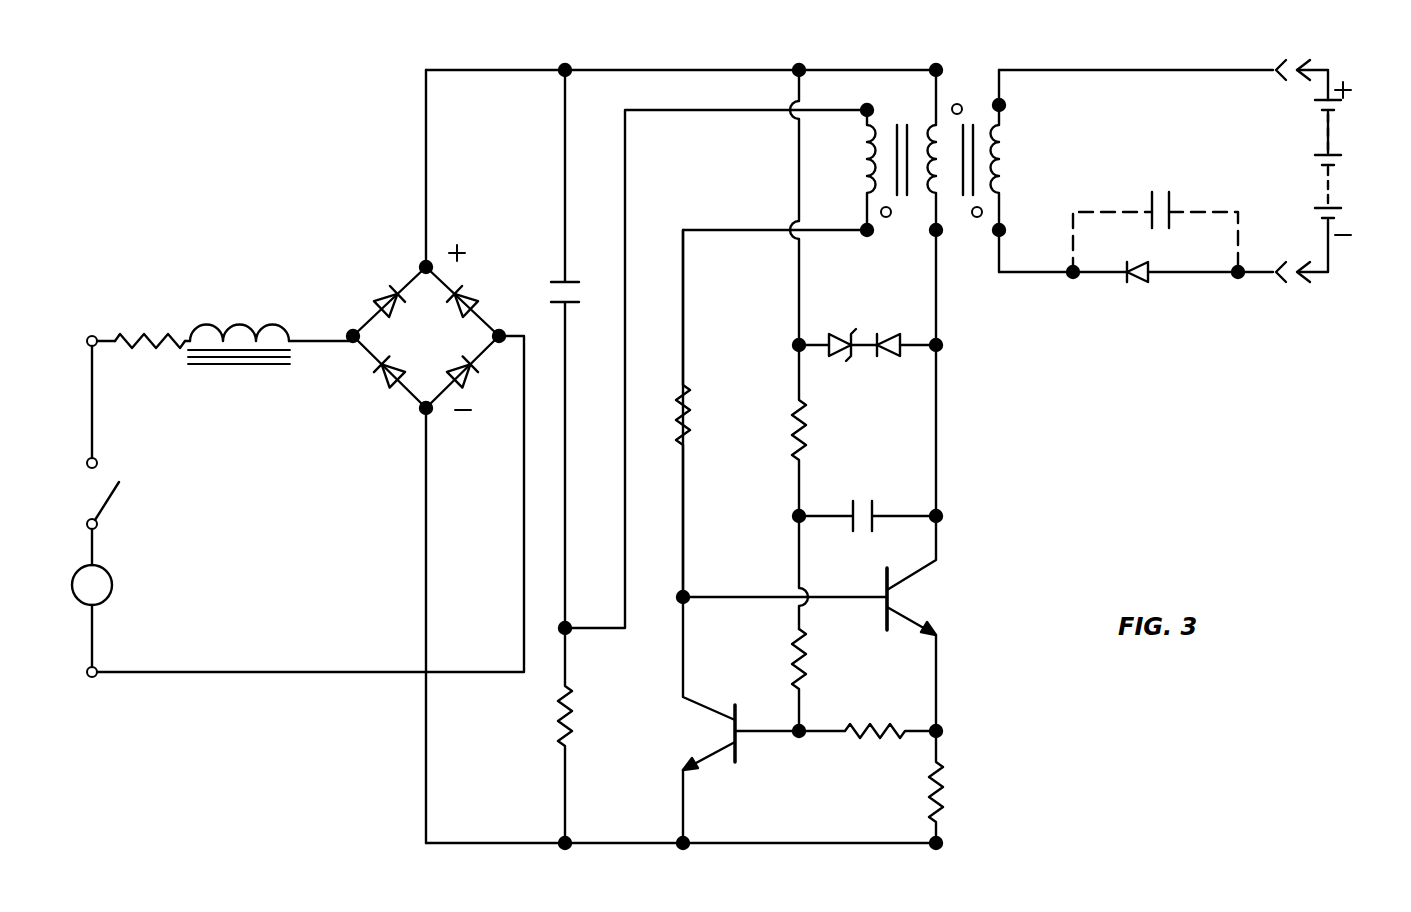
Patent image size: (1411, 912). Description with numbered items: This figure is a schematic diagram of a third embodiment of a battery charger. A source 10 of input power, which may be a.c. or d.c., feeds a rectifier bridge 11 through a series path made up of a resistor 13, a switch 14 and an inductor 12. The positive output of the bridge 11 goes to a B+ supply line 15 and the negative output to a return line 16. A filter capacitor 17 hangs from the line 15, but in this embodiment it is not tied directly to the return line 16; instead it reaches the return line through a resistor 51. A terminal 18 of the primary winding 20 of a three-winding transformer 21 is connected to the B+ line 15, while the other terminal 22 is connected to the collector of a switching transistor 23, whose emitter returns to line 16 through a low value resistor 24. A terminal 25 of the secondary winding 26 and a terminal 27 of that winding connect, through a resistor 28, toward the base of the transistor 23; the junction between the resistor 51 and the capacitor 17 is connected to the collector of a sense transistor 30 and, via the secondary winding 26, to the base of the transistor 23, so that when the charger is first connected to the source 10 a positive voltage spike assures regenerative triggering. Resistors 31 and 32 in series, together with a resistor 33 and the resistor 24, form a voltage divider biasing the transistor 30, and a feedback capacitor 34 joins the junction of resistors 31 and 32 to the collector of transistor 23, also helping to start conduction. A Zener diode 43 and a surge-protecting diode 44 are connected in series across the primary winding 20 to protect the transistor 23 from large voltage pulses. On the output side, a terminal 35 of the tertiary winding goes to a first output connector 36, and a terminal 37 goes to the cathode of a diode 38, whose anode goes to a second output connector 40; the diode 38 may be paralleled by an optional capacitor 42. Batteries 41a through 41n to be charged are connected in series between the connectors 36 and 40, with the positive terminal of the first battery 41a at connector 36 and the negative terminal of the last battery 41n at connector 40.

The source 10 is at (113, 582).
The rectifier bridge 11 is at (392, 258).
The inductor 12 is at (203, 323).
The resistor 13 is at (135, 332).
The switch 14 is at (98, 493).
The B+ supply line 15 is at (512, 70).
The return line 16 is at (462, 842).
The filter capacitor 17 is at (575, 295).
The terminal 18 is at (940, 65).
The primary winding 20 is at (932, 180).
The three-winding transformer 21 is at (875, 57).
The terminal 22 is at (942, 235).
The switching transistor 23 is at (937, 598).
The resistor 24 is at (945, 783).
The terminal 25 is at (875, 105).
The secondary winding 26 is at (866, 136).
The terminal 27 is at (866, 240).
The resistor 28 is at (690, 406).
The sense transistor 30 is at (710, 731).
The resistor 31 is at (790, 445).
The resistor 32 is at (810, 648).
The resistor 33 is at (868, 740).
The feedback capacitor 34 is at (860, 505).
The terminal 35 is at (1005, 103).
The first output connector 36 is at (1292, 62).
The terminal 37 is at (1005, 230).
The diode 38 is at (1135, 282).
The second output connector 40 is at (1295, 276).
The first battery 41a is at (1395, 74).
The last battery 41n is at (1345, 212).
The capacitor 42 is at (1160, 190).
The Zener diode 43 is at (832, 364).
The surge-protecting diode 44 is at (888, 363).
The resistor 51 is at (570, 722).